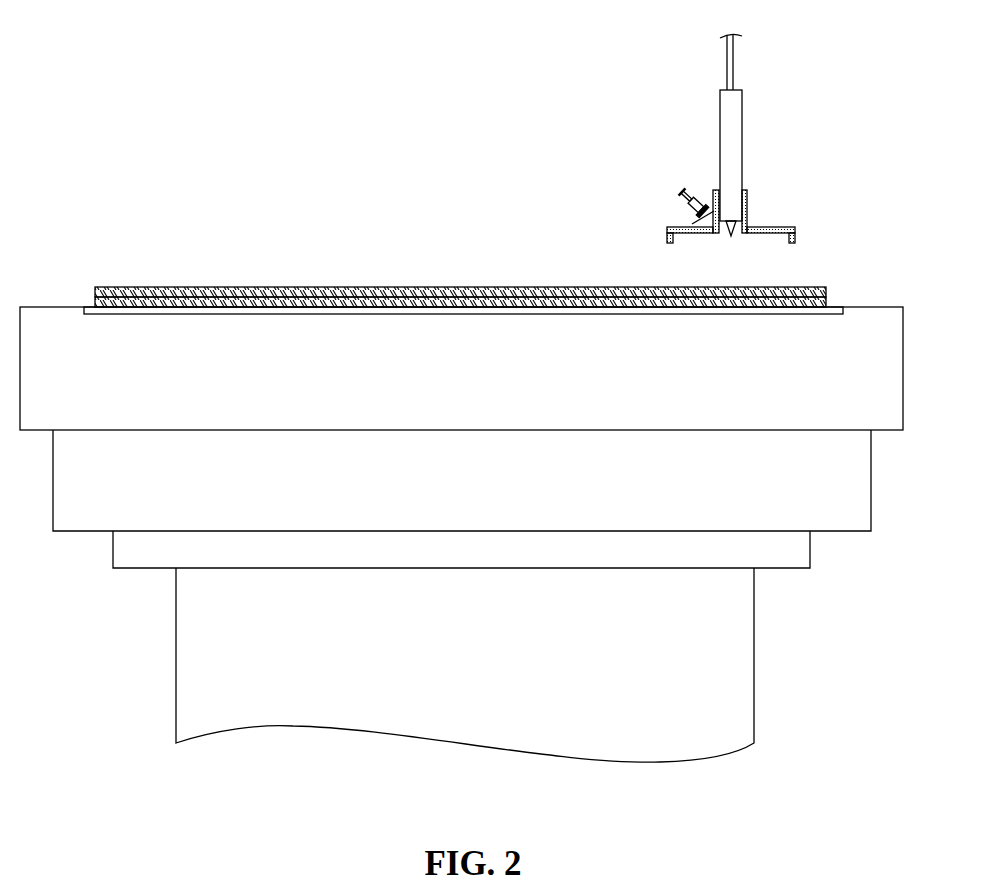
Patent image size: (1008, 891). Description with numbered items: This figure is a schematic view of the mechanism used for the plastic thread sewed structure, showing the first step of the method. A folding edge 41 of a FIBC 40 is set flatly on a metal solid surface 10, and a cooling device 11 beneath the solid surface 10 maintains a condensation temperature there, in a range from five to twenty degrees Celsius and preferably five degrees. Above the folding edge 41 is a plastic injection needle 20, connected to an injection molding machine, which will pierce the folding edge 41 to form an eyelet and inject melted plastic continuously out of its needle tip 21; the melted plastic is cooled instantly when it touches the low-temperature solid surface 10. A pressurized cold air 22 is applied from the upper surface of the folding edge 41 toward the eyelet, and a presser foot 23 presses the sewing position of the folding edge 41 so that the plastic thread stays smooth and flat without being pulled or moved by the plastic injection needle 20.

The solid surface 10 is at (485, 378).
The cooling device 11 is at (485, 486).
The plastic injection needle 20 is at (770, 133).
The needle tip 21 is at (731, 236).
The pressurized cold air 22 is at (670, 212).
The presser foot 23 is at (787, 226).
The FIBC 40 is at (422, 262).
The folding edge 41 is at (437, 287).